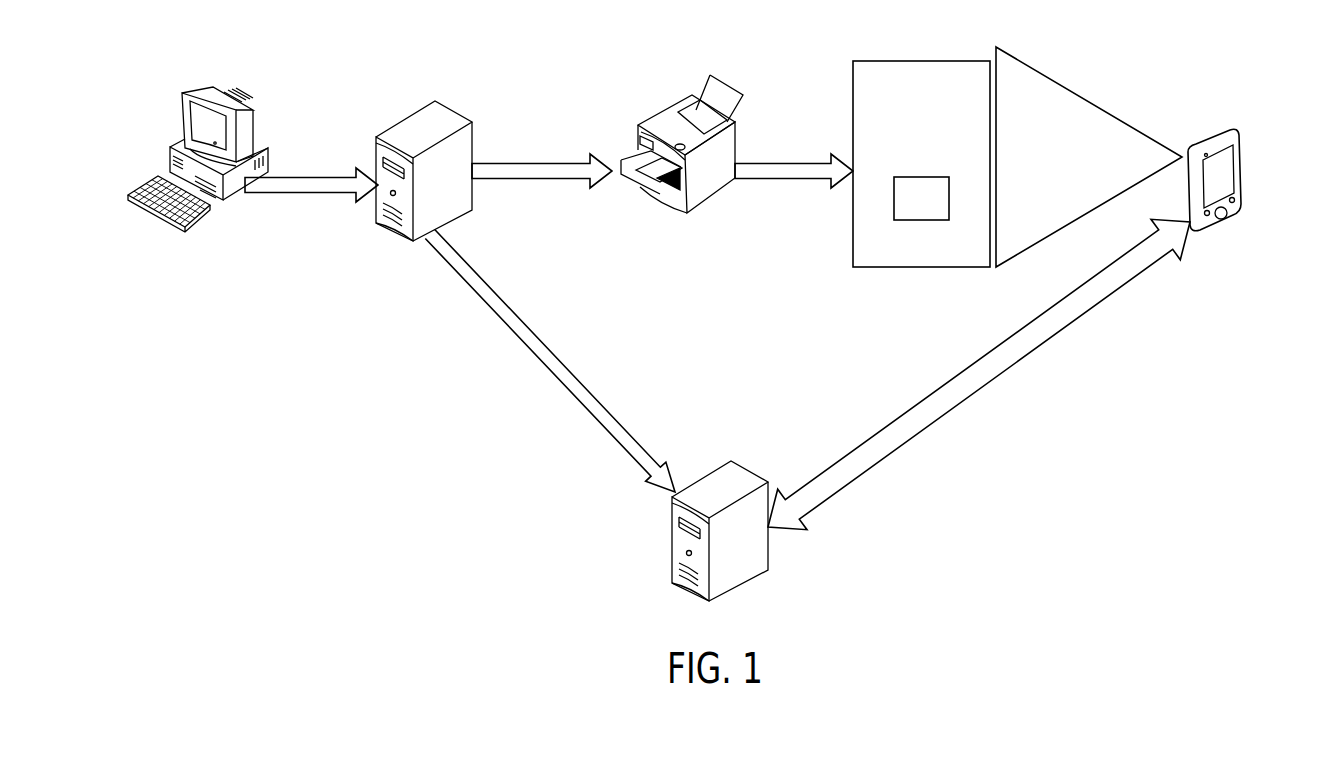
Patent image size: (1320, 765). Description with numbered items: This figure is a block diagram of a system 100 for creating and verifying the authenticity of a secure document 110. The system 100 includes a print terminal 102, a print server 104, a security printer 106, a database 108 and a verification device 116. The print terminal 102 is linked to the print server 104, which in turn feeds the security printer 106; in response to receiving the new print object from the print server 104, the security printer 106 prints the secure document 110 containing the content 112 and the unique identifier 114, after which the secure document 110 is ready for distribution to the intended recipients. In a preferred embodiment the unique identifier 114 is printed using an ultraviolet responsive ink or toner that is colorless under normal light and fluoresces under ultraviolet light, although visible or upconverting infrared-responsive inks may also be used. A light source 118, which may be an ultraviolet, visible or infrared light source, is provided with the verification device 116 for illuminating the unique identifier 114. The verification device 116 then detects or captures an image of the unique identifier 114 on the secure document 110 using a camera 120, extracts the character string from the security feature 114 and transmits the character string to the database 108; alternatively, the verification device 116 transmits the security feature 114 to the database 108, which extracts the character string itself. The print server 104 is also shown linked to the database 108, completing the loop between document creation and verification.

The system 100 is at (1158, 432).
The print terminal 102 is at (255, 131).
The print server 104 is at (452, 108).
The security printer 106 is at (667, 112).
The database 108 is at (750, 468).
The secure document 110 is at (894, 137).
The content 112 is at (865, 100).
The unique identifier 114 is at (893, 190).
The verification device 116 is at (1149, 157).
The ultraviolet light source 118 is at (1188, 148).
The camera 120 is at (1218, 127).